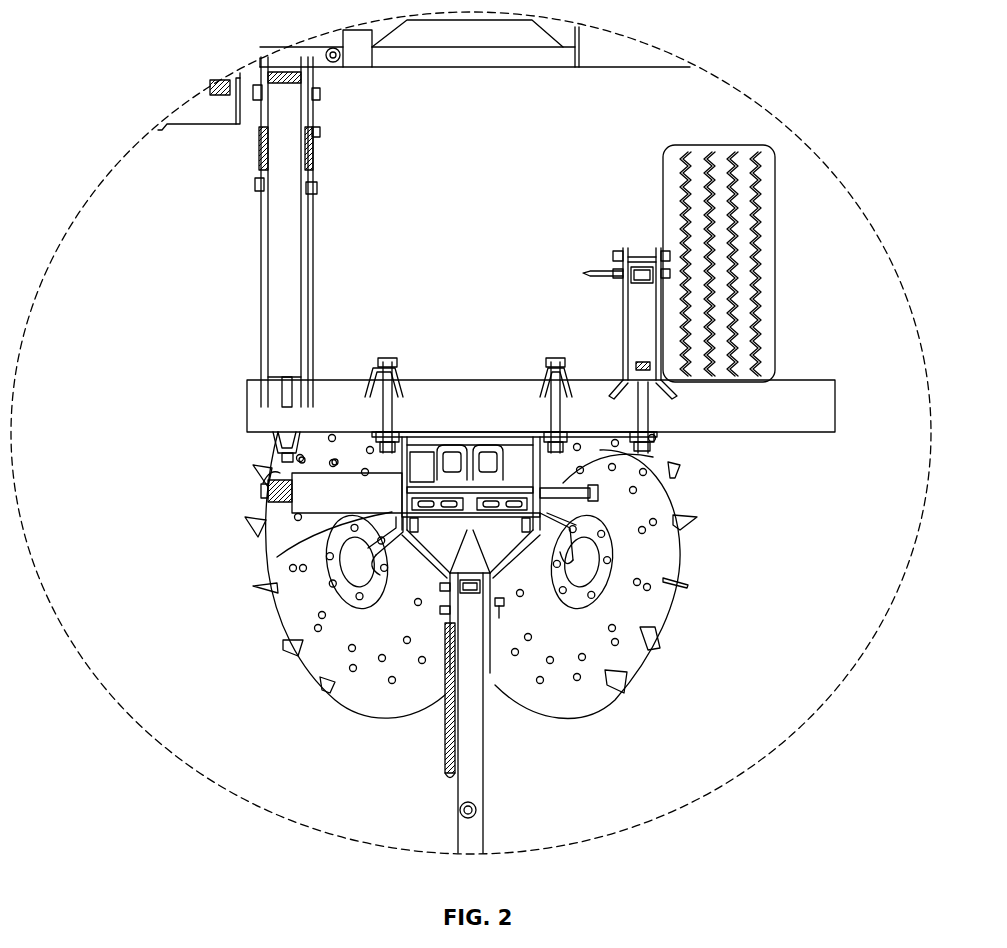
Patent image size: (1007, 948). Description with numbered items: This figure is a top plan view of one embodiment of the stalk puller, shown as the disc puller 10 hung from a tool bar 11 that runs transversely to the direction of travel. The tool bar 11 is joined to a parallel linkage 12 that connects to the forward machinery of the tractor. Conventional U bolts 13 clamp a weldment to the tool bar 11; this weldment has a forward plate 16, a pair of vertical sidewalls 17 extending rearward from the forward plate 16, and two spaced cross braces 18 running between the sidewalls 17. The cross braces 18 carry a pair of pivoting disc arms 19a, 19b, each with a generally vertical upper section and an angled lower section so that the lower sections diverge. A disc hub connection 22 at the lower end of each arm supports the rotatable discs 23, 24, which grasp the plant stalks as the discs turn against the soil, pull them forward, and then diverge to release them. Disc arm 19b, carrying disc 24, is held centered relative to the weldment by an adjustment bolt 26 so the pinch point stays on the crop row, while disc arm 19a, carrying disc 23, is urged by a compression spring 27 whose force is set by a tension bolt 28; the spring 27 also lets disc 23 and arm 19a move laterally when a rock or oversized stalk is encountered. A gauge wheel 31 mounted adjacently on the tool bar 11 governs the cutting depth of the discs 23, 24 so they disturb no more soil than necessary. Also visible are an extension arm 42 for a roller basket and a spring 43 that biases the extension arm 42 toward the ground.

The disc puller 10 is at (694, 622).
The tool bar 11 is at (806, 413).
The parallel linkage 12 is at (265, 227).
The U bolts 13 is at (387, 413).
The forward plate 16 is at (412, 467).
The vertical sidewalls 17 is at (398, 463).
The cross braces 18 is at (507, 443).
The disc arm 19a is at (380, 537).
The disc arm 19b is at (507, 520).
The disc hub connection 22 is at (360, 567).
The rotatable disc 23 is at (372, 697).
The rotatable disc 24 is at (568, 697).
The adjustment bolt 26 is at (640, 457).
The compression spring 27 is at (422, 480).
The tension bolt 28 is at (263, 477).
The gauge wheel 31 is at (763, 284).
The extension arm 42 is at (470, 772).
The spring 43 is at (443, 757).